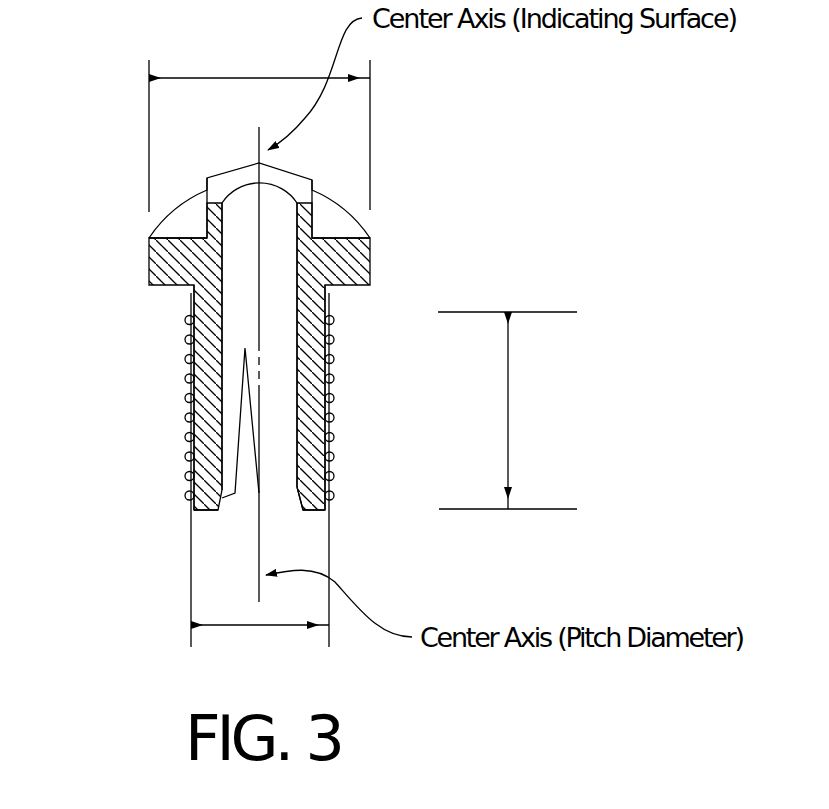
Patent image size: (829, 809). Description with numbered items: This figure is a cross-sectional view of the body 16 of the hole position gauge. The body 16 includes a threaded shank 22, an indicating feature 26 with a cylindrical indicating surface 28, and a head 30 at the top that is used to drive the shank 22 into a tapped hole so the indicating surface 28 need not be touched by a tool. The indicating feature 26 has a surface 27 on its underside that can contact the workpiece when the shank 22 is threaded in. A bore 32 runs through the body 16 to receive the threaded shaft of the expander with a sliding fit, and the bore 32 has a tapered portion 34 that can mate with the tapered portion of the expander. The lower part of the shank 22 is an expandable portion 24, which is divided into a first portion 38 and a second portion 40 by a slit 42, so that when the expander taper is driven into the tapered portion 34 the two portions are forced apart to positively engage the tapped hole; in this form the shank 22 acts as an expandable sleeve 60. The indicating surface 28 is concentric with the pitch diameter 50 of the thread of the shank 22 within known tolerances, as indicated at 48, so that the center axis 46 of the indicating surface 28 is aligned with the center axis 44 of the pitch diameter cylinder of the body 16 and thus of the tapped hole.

The body 16 is at (140, 397).
The shank 22 is at (344, 355).
The expandable portion 24 is at (333, 453).
The indicating feature 26 is at (177, 222).
The surface of the indicating feature 27 is at (355, 292).
The indicating surface 28 is at (148, 260).
The head 30 is at (232, 180).
The bore 32 is at (276, 212).
The tapered portion 34 is at (285, 477).
The first portion 38 is at (208, 465).
The second portion 40 is at (322, 508).
The slit 42 is at (248, 463).
The center axis of the pitch diameter cylinder 44 is at (278, 364).
The center axis of the indicating surface 46 is at (256, 275).
The concentricity of indicating surface with pitch diameter 48 is at (198, 80).
The pitch diameter 50 is at (232, 627).
The expandable sleeve 60 is at (508, 377).